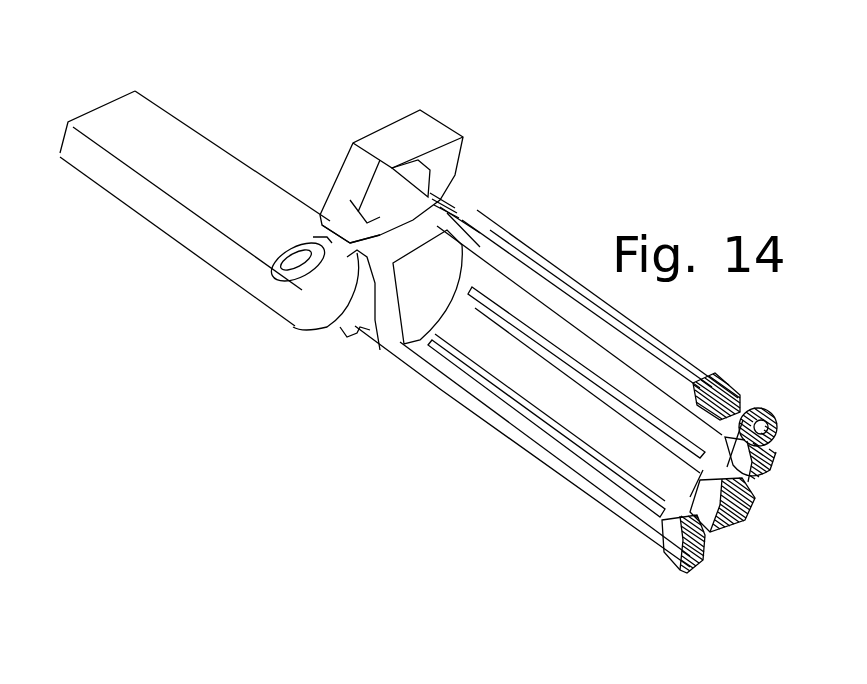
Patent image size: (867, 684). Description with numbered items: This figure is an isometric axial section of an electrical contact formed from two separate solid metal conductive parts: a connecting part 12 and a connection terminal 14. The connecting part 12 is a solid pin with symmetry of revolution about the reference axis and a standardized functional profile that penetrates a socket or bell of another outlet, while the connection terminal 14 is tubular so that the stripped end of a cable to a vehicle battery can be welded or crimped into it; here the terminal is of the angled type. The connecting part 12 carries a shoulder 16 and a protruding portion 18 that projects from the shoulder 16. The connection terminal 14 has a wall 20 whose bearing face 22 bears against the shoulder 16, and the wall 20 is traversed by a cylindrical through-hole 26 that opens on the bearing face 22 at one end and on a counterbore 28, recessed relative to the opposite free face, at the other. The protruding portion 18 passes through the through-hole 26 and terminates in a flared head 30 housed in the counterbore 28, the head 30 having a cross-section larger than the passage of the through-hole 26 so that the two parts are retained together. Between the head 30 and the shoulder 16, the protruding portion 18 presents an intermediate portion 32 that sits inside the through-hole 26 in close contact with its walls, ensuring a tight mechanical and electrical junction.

The connecting part 12 is at (535, 453).
The connection terminal 14 is at (145, 118).
The shoulder 16 is at (387, 199).
The protruding portion 18 is at (337, 43).
The wall 20 is at (338, 278).
The bearing face 22 is at (387, 199).
The through-hole 26 is at (360, 252).
The counterbore 28 is at (318, 242).
The head 30 is at (327, 217).
The intermediate portion 32 is at (345, 220).